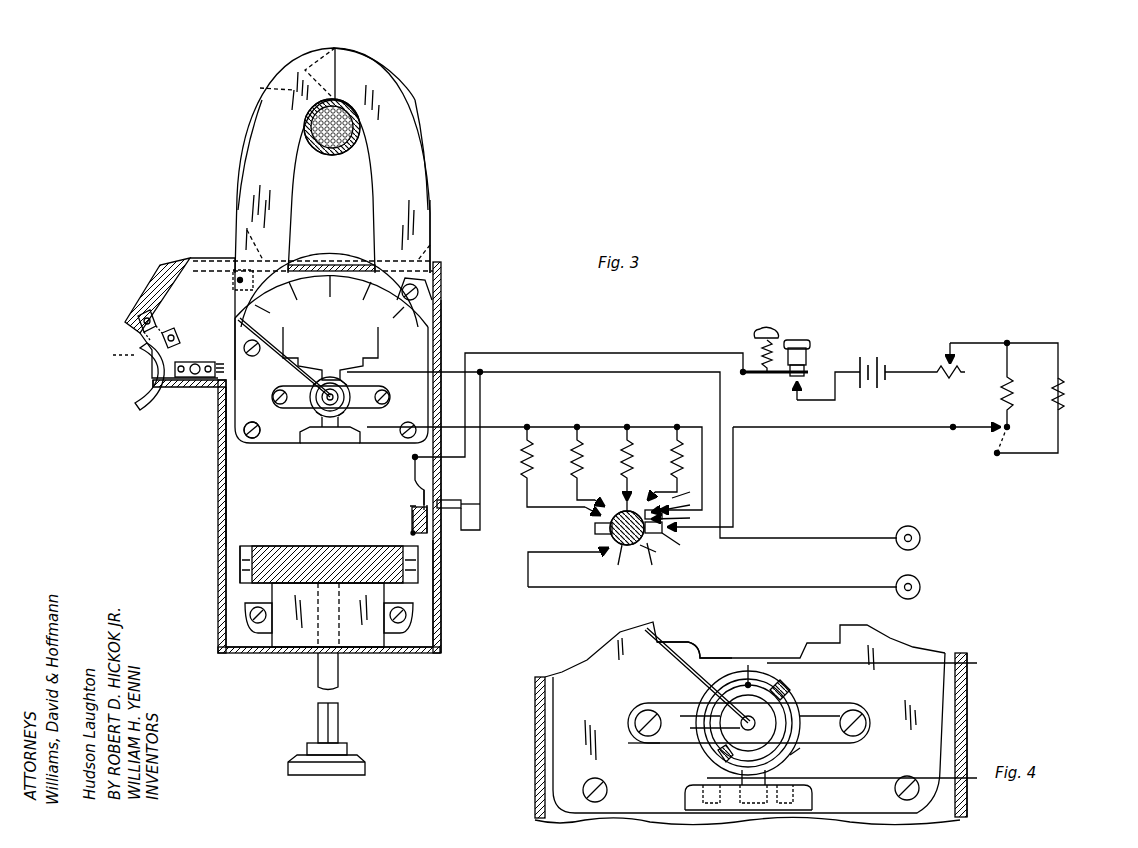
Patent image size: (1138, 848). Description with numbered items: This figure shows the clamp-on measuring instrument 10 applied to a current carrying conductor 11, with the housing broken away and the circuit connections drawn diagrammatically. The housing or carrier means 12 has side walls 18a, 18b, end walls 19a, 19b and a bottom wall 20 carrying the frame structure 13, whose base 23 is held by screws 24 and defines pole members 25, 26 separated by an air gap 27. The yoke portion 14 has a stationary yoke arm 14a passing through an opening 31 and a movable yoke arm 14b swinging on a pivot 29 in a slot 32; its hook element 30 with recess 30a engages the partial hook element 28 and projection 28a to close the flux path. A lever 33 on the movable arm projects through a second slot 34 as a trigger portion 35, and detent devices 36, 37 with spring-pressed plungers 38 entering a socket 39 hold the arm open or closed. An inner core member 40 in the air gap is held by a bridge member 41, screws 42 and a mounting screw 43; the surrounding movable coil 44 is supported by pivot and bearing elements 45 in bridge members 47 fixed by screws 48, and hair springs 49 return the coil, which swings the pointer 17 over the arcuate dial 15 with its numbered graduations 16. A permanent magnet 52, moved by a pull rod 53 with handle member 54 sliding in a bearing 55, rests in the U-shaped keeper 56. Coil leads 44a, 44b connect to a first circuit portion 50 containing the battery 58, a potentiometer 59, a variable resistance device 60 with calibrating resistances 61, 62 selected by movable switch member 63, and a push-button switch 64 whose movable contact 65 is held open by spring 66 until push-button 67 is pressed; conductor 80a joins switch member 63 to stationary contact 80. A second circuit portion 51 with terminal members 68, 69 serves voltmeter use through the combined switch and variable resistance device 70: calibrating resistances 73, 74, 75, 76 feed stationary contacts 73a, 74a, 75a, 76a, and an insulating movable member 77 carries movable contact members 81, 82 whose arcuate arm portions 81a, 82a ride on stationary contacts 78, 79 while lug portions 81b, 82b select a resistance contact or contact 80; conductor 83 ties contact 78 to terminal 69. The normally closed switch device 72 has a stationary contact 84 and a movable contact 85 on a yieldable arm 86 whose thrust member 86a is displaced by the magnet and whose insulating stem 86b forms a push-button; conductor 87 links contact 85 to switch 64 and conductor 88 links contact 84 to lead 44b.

In FIG. 3, the measuring instrument 10 is at (441, 300).
In FIG. 3, the current carrying conductor 11 is at (324, 153).
In FIG. 3, the carrier means 12 is at (441, 618).
In FIG. 4, the carrier means 12 is at (970, 728).
In FIG. 3, the frame structure 13 is at (435, 213).
In FIG. 4, the frame structure 13 is at (918, 650).
In FIG. 3, the yoke portion 14 is at (410, 122).
In FIG. 3, the stationary yoke arm 14a is at (426, 177).
In FIG. 3, the movable yoke arm 14b is at (243, 177).
In FIG. 3, the arcuate dial 15 is at (318, 308).
In FIG. 3, the numbered graduations 16 is at (325, 273).
In FIG. 3, the pointer 17 is at (284, 364).
In FIG. 4, the pointer 17 is at (680, 665).
In FIG. 3, the side wall 18a is at (441, 575).
In FIG. 3, the side wall 18b is at (227, 535).
In FIG. 3, the end wall 19a is at (360, 655).
In FIG. 3, the end wall 19b is at (290, 273).
In FIG. 3, the bottom wall 20 is at (227, 503).
In FIG. 3, the base 23 is at (442, 350).
In FIG. 4, the base 23 is at (935, 702).
In FIG. 3, the screws 24 is at (243, 432).
In FIG. 4, the screws 24 is at (608, 792).
In FIG. 3, the pole member 25 is at (322, 430).
In FIG. 3, the pole member 26 is at (362, 432).
In FIG. 3, the air gap 27 is at (335, 372).
In FIG. 4, the air gap 27 is at (738, 665).
In FIG. 3, the partial hook element 28 is at (358, 72).
In FIG. 3, the projection 28a is at (260, 88).
In FIG. 3, the pivot 29 is at (236, 283).
In FIG. 3, the hook element 30 is at (296, 66).
In FIG. 3, the recess 30a is at (314, 65).
In FIG. 3, the opening 31 is at (430, 245).
In FIG. 3, the laterally extending slot 32 is at (247, 230).
In FIG. 3, the lever 33 is at (172, 284).
In FIG. 3, the second slot 34 is at (190, 390).
In FIG. 3, the trigger portion 35 is at (138, 390).
In FIG. 3, the open detent device 36 is at (208, 362).
In FIG. 3, the closed detent device 37 is at (140, 306).
In FIG. 3, the spring-pressed plunger 38 is at (195, 363).
In FIG. 3, the socket 39 is at (113, 353).
In FIG. 4, the inner core member 40 is at (750, 665).
In FIG. 4, the bridge member 41 is at (814, 800).
In FIG. 4, the screws 42 is at (688, 800).
In FIG. 4, the mounting screw 43 is at (790, 770).
In FIG. 3, the movable coil 44 is at (350, 387).
In FIG. 4, the movable coil 44 is at (780, 690).
In FIG. 3, the coil lead 44a is at (400, 430).
In FIG. 4, the coil lead 44a is at (887, 776).
In FIG. 3, the coil lead 44b is at (412, 382).
In FIG. 4, the coil lead 44b is at (870, 667).
In FIG. 4, the pivot and bearing elements 45 is at (757, 723).
In FIG. 3, the bridge members 47 is at (290, 410).
In FIG. 4, the bridge members 47 is at (668, 735).
In FIG. 4, the screws 48 is at (636, 717).
In FIG. 4, the hair springs 49 is at (800, 750).
In FIG. 3, the first circuit portion 50 is at (896, 379).
In FIG. 3, the second circuit portion 51 is at (868, 562).
In FIG. 3, the permanent magnet 52 is at (320, 549).
In FIG. 3, the pull rod 53 is at (340, 722).
In FIG. 3, the handle member 54 is at (292, 765).
In FIG. 3, the bearing 55 is at (300, 640).
In FIG. 3, the keeper 56 is at (238, 572).
In FIG. 3, the battery 58 is at (880, 358).
In FIG. 3, the potentiometer 59 is at (950, 350).
In FIG. 3, the second variable resistance device 60 is at (1032, 358).
In FIG. 3, the calibrating resistance 61 is at (1002, 392).
In FIG. 3, the calibrating resistance 62 is at (1065, 394).
In FIG. 3, the movable switch member 63 is at (975, 440).
In FIG. 3, the push-button switch 64 is at (775, 386).
In FIG. 3, the movable contact 65 is at (812, 372).
In FIG. 3, the spring 66 is at (757, 350).
In FIG. 3, the push-button 67 is at (797, 341).
In FIG. 3, the terminal member 68 is at (920, 538).
In FIG. 3, the terminal member 69 is at (920, 587).
In FIG. 3, the combined switch and variable resistance device 70 is at (612, 548).
In FIG. 3, the normally closed switch device 72 is at (405, 512).
In FIG. 3, the calibrating resistance 73 is at (553, 466).
In FIG. 3, the stationary contact 73a is at (583, 512).
In FIG. 3, the calibrating resistance 74 is at (590, 463).
In FIG. 3, the stationary contact 74a is at (590, 500).
In FIG. 3, the calibrating resistance 75 is at (634, 455).
In FIG. 3, the stationary contact 75a is at (642, 487).
In FIG. 3, the calibrating resistance 76 is at (675, 448).
In FIG. 3, the stationary contact 76a is at (691, 484).
In FIG. 3, the movable switch member 77 is at (660, 553).
In FIG. 3, the stationary contact 78 is at (598, 553).
In FIG. 3, the stationary contact 79 is at (672, 517).
In FIG. 3, the stationary contact 80 is at (668, 530).
In FIG. 3, the conductor 80a is at (815, 427).
In FIG. 3, the movable contact member 81 is at (631, 564).
In FIG. 3, the arcuate arm portion 81a is at (665, 563).
In FIG. 3, the lug portion 81b is at (594, 533).
In FIG. 3, the movable contact member 82 is at (624, 503).
In FIG. 3, the arcuate arm portion 82a is at (690, 501).
In FIG. 3, the lug portion 82b is at (685, 548).
In FIG. 3, the conductor 83 is at (770, 587).
In FIG. 3, the stationary contact 84 is at (410, 518).
In FIG. 3, the movable contact 85 is at (432, 530).
In FIG. 3, the yieldable arm 86 is at (427, 490).
In FIG. 3, the thrust member 86a is at (418, 483).
In FIG. 3, the stem 86b is at (462, 508).
In FIG. 3, the conductor 87 is at (625, 343).
In FIG. 3, the conductor 88 is at (482, 460).